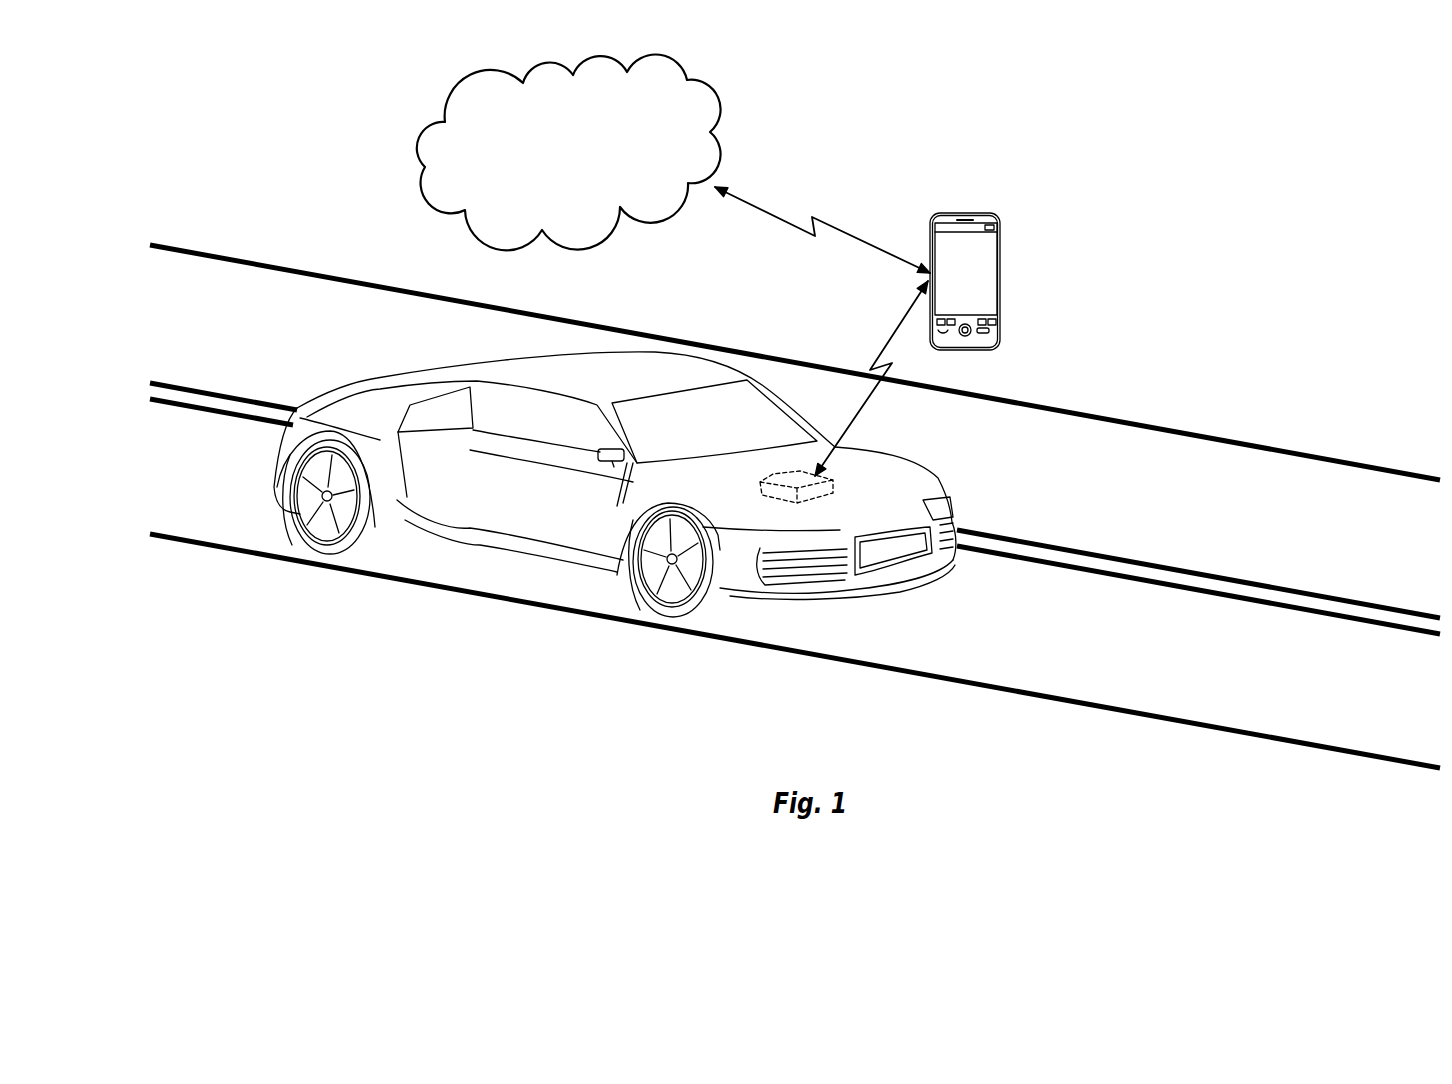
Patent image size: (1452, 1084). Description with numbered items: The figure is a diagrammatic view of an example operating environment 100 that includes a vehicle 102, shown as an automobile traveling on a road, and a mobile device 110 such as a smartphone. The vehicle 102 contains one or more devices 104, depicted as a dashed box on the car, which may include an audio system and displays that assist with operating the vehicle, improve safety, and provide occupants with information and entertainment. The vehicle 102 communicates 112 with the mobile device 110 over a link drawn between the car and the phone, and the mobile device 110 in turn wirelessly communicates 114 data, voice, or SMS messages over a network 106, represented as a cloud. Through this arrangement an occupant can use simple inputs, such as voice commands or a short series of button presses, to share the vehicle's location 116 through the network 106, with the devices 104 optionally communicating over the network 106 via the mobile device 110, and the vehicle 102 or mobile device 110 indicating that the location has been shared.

The operating environment 100 is at (992, 118).
The vehicle 102 is at (700, 352).
The devices 104 is at (777, 499).
The network 106 is at (585, 179).
The mobile device 110 is at (1001, 273).
The communication between vehicle and mobile device 112 is at (888, 332).
The wireless communication over the network 114 is at (775, 214).
The vehicle's location 116 is at (1082, 645).